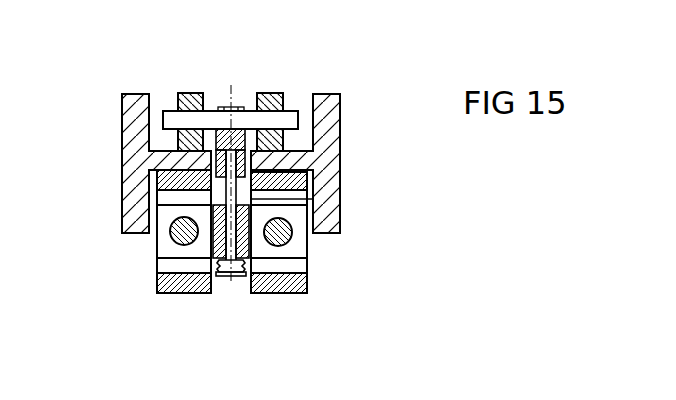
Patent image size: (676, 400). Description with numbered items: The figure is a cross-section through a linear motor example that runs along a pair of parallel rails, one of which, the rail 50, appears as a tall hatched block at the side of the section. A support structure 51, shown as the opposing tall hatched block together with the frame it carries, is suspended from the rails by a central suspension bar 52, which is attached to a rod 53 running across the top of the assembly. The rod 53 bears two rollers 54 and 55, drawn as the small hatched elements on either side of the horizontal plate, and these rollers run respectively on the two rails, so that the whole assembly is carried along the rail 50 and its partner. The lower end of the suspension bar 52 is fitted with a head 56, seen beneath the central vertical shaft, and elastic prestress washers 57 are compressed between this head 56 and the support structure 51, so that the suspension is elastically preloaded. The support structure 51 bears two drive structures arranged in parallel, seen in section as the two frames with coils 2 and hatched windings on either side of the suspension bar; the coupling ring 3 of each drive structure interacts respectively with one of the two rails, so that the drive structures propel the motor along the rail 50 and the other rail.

The conductor wire 2 is at (183, 240).
The coupling ring 3 is at (182, 292).
The rail 50 is at (323, 158).
The support structure 51 is at (157, 238).
The central suspension bar 52 is at (237, 197).
The rod 53 is at (208, 122).
The roller 54 is at (178, 93).
The roller 55 is at (278, 93).
The head 56 is at (232, 277).
The elastic prestress washers 57 is at (200, 293).